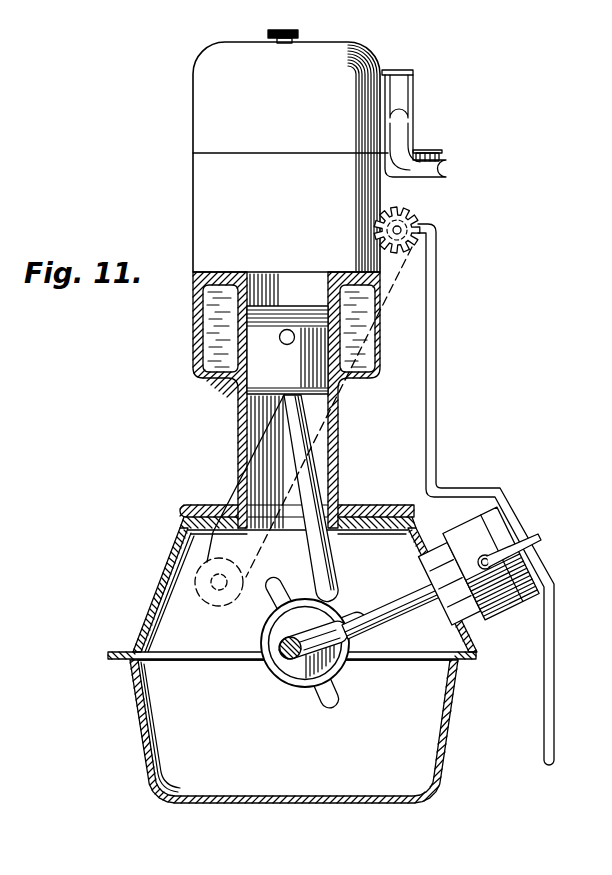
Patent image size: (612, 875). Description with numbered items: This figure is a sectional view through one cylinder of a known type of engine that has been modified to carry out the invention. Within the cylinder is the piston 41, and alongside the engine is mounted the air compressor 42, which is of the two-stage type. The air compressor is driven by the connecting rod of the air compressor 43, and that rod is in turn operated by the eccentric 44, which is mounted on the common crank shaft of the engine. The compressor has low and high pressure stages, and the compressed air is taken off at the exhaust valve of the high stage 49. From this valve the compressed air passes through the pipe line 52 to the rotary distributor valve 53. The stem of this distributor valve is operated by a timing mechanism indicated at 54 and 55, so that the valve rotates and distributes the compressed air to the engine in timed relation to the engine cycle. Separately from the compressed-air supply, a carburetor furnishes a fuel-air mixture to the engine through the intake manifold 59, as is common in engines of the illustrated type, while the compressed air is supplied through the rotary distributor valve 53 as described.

The piston 41 is at (262, 366).
The air compressor 42 is at (517, 603).
The connecting rod of the air compressor 43 is at (383, 618).
The eccentric 44 is at (305, 672).
The exhaust valve of the high stage 49 is at (540, 541).
The pipe line 52 is at (437, 408).
The rotary distributor valve 53 is at (417, 260).
The timing mechanism 54 is at (205, 597).
The timing mechanism 55 is at (418, 217).
The intake manifold 59 is at (440, 163).